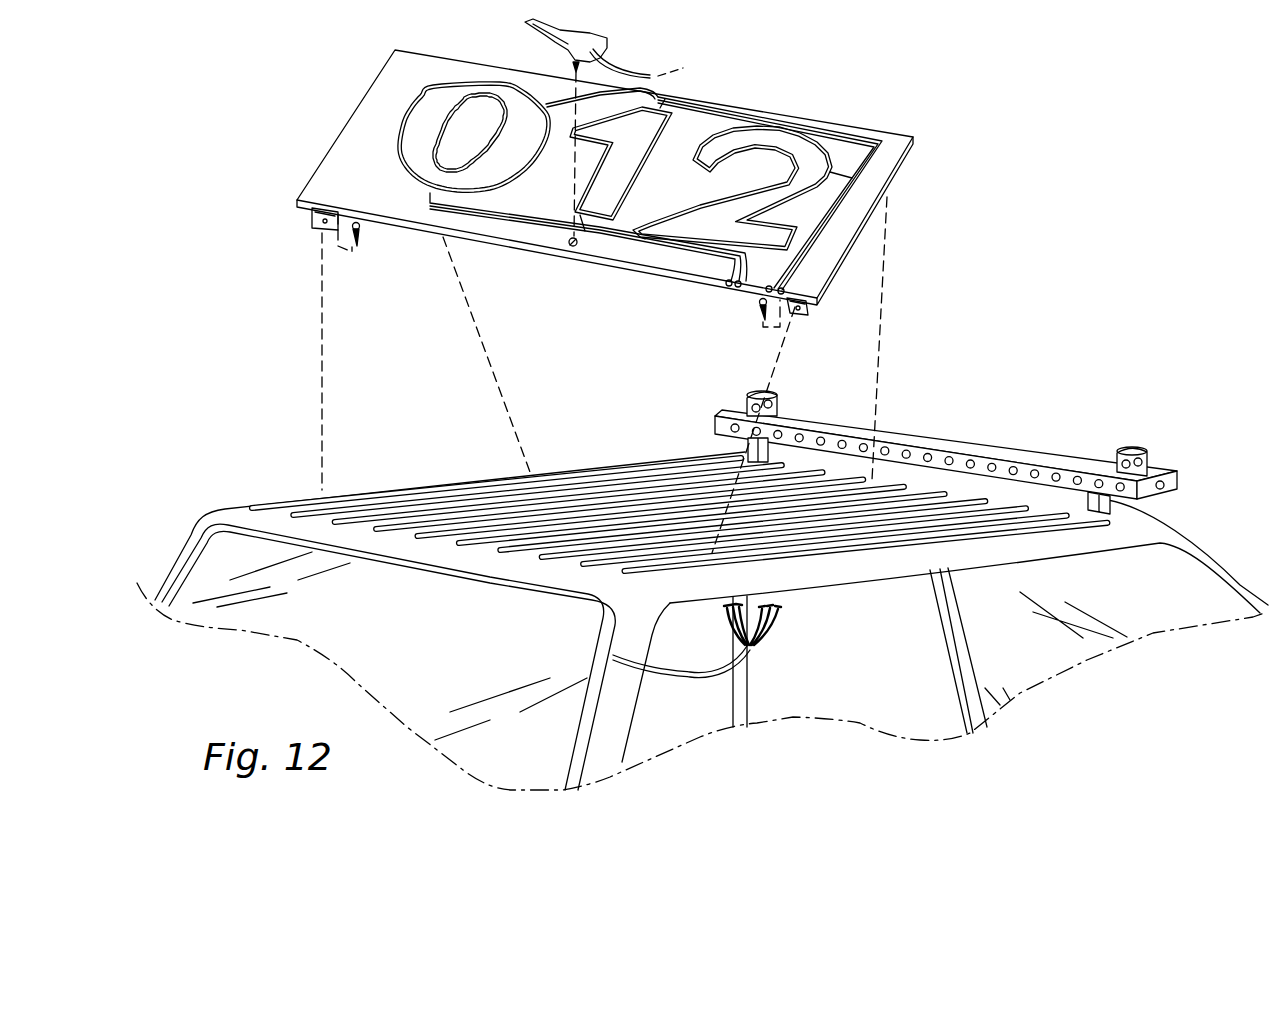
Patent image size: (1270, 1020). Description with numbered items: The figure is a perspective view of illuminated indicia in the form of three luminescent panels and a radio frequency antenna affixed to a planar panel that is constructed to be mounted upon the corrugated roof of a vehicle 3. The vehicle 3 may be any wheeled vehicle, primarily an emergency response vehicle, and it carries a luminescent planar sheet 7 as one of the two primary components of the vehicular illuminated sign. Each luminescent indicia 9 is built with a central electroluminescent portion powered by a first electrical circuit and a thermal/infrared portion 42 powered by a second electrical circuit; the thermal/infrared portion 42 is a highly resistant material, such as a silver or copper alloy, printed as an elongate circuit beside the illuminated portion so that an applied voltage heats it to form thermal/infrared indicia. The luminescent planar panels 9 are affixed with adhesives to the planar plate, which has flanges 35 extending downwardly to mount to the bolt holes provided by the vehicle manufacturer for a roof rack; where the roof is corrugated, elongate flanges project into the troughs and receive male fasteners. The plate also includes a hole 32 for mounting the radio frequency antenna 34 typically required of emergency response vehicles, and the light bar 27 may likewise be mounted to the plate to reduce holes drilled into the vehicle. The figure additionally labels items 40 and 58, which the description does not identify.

The vehicle 3 is at (1228, 578).
The luminescent planar sheet 7 is at (278, 500).
The luminescent indicia 9 is at (392, 93).
The light bar 27 is at (1163, 468).
The hole 32 is at (575, 250).
The radio frequency antennae 34 is at (605, 40).
The flanges 35 is at (808, 308).
The letter face 40 is at (423, 147).
The thermal/infrared portion 42 is at (413, 127).
The wiring harness 58 is at (760, 647).